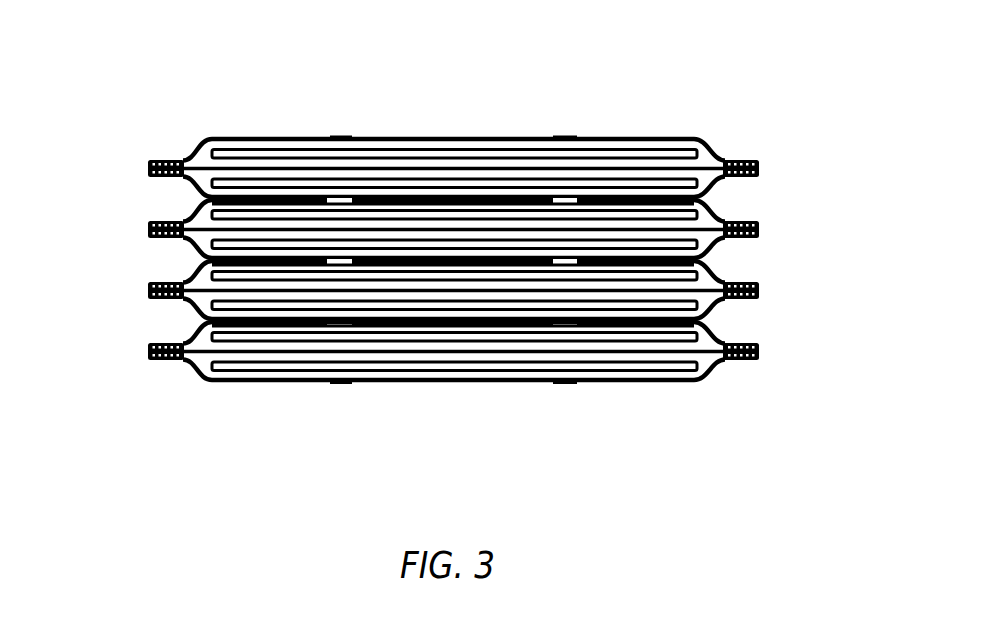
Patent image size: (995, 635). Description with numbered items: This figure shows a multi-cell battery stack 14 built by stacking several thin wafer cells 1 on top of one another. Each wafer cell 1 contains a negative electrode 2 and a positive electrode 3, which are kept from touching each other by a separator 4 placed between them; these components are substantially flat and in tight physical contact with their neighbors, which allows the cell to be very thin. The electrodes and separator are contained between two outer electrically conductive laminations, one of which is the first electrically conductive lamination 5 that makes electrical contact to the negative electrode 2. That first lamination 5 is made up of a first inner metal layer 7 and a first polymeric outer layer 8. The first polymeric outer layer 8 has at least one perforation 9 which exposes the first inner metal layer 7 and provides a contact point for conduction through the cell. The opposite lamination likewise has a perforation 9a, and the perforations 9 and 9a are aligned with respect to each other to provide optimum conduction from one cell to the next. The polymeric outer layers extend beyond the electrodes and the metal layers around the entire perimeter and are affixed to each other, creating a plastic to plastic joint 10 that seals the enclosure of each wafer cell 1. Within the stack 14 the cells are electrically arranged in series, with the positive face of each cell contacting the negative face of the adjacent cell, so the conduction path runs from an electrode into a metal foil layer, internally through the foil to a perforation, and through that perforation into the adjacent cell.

The multi-cell battery stack 14 is at (237, 73).
The wafer cell 1 is at (774, 157).
The negative electrode 2 is at (200, 321).
The positive electrode 3 is at (297, 378).
The separator 4 is at (200, 370).
The first electrically conductive lamination 5 is at (245, 380).
The first inner metal layer 7 is at (568, 378).
The first polymeric outer layer 8 is at (673, 383).
The perforation 9 is at (348, 388).
The perforation 9a is at (340, 318).
The plastic to plastic joint 10 is at (150, 357).